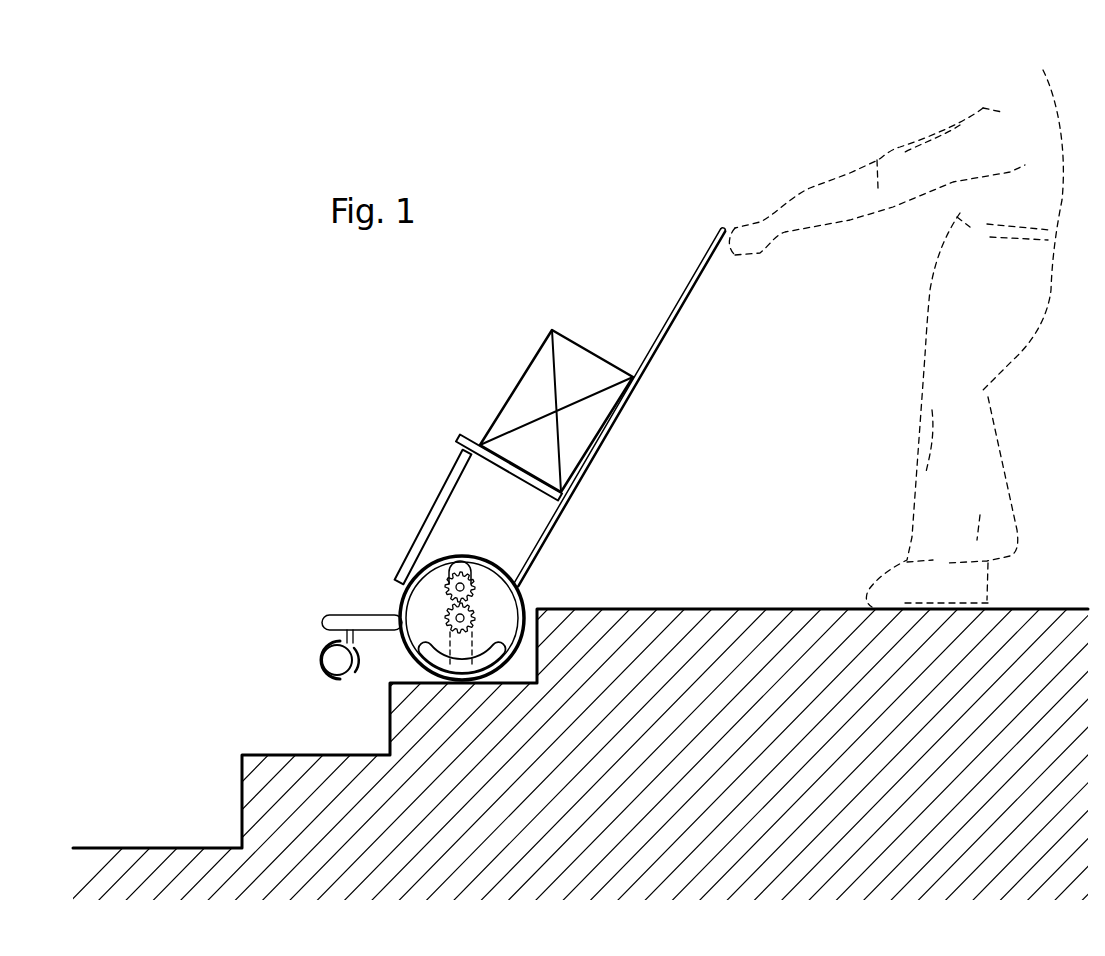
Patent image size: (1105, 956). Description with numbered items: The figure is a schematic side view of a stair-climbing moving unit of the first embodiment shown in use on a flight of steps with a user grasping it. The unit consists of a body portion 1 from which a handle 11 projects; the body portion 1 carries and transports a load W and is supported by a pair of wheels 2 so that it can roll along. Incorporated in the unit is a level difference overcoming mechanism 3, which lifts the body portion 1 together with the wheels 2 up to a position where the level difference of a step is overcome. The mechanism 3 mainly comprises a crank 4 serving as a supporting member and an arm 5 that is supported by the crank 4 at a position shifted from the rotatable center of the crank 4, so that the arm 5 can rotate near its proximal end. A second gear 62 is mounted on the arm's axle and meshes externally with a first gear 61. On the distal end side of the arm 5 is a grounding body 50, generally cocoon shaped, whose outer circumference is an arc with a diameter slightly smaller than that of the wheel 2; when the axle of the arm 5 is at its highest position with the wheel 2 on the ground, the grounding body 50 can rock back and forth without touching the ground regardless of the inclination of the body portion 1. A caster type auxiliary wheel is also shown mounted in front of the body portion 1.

The body portion 1 is at (436, 455).
The handle 11 is at (705, 258).
The load W is at (535, 352).
The wheels 2 is at (533, 588).
The level difference overcoming mechanism 3 is at (432, 602).
The crank 4 is at (428, 558).
The arm 5 is at (418, 657).
The grounding body 50 is at (474, 656).
The first gear 61 is at (480, 602).
The second gear 62 is at (472, 566).